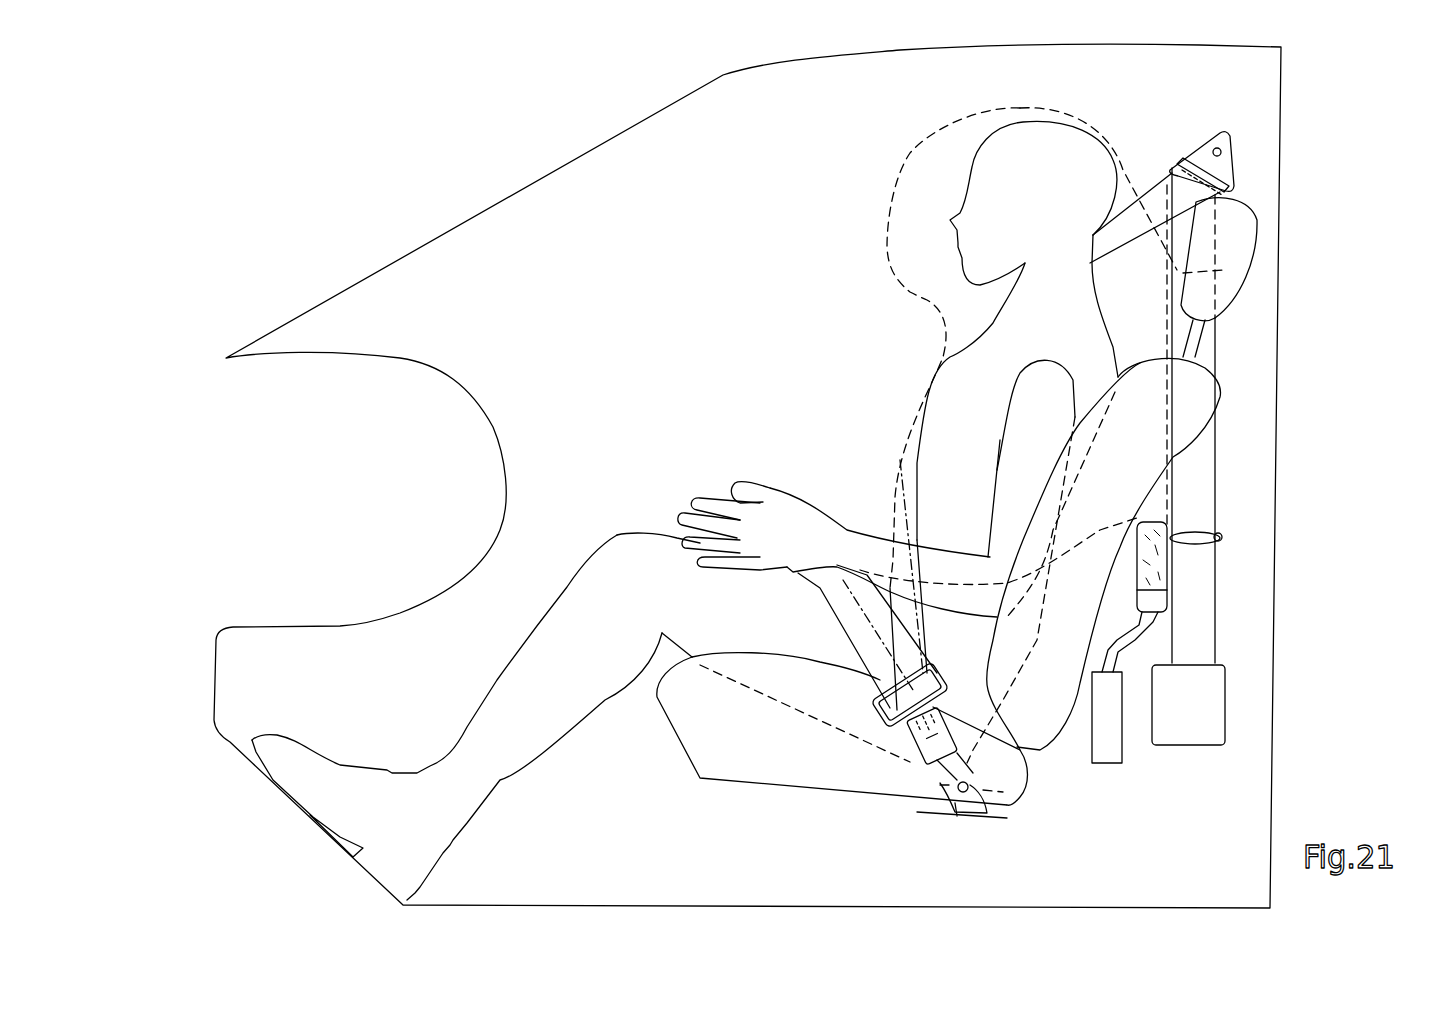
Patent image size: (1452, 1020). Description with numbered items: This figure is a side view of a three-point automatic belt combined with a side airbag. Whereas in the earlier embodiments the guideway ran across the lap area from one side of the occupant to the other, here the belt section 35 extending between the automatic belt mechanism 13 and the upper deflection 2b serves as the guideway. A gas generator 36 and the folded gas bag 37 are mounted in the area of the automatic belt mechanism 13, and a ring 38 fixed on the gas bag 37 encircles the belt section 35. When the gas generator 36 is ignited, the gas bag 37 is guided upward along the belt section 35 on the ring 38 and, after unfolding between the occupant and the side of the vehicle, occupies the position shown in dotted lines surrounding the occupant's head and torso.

The upper deflection 2b is at (1223, 179).
The automatic belt mechanism 13 is at (1212, 710).
The belt section 35 is at (1198, 478).
The gas generator 36 is at (1112, 750).
The folded gas bag 37 is at (952, 163).
The ring 38 is at (1222, 538).